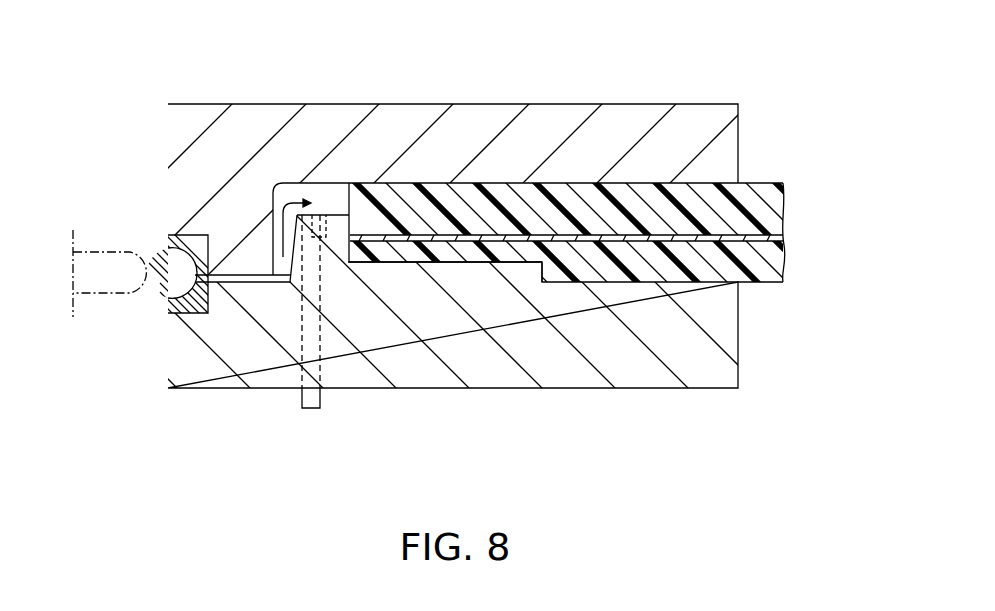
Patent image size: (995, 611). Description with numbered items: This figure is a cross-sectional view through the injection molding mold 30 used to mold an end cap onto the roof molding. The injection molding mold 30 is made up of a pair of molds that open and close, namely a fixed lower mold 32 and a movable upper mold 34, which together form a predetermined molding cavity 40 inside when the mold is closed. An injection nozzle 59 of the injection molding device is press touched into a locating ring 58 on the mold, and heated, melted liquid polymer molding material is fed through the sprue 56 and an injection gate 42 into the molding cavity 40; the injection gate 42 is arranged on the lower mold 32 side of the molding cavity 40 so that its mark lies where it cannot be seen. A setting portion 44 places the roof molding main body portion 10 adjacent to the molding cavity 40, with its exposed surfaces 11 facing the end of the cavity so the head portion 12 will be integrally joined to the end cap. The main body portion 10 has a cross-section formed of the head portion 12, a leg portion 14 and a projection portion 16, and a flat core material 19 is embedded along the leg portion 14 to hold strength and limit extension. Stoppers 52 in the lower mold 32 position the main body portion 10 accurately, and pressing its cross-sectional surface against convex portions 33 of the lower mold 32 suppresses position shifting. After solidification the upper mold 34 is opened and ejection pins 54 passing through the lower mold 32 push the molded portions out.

The injection molding mold 30 is at (780, 70).
The movable upper mold 34 is at (597, 122).
The fixed lower mold 32 is at (654, 372).
The roof molding main body portion 10 is at (766, 169).
The head portion 12 is at (797, 181).
The leg portion 14 is at (797, 218).
The projection portion 16 is at (797, 259).
The molding cavity 40 is at (282, 195).
The exposed surfaces 11 is at (322, 205).
The stoppers 52 is at (331, 208).
The ejection pins 54 is at (323, 403).
The convex portions 33 is at (386, 266).
The injection gate 42 is at (293, 281).
The sprue 56 is at (228, 280).
The locating ring 58 is at (192, 308).
The injection nozzle 59 is at (127, 260).
The setting portion 44 is at (455, 263).
The core material 19 is at (503, 243).